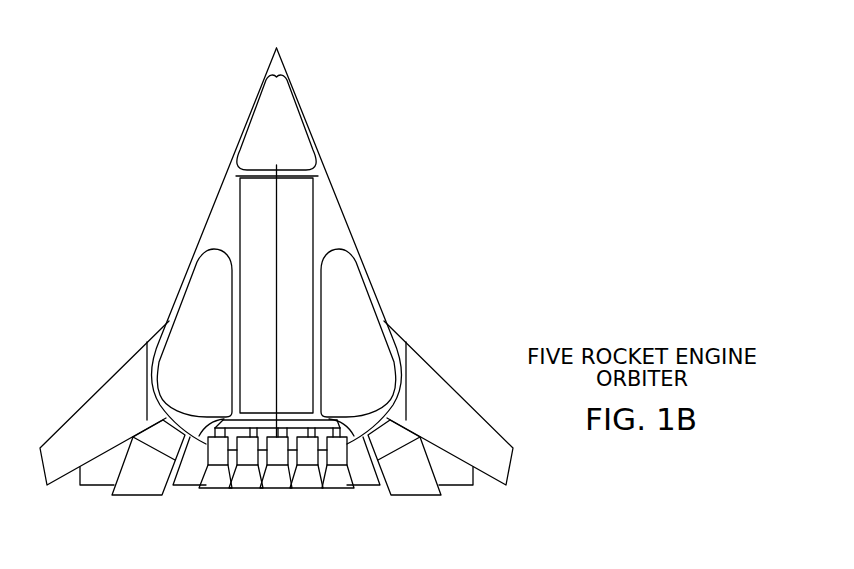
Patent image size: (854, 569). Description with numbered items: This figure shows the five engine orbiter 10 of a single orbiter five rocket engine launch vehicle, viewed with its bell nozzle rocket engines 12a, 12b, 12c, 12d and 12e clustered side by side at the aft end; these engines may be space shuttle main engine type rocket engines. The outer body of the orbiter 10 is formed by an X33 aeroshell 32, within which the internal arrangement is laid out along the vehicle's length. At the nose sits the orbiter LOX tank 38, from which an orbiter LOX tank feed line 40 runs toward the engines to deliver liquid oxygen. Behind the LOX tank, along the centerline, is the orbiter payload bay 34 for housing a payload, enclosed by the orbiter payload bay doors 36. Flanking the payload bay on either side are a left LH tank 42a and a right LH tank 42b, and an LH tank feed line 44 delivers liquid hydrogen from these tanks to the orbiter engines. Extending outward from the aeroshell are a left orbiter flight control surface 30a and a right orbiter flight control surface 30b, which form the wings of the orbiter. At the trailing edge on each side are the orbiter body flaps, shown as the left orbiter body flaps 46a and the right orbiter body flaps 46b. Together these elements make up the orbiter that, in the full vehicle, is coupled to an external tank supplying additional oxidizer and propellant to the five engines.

The five engine orbiter 10 is at (215, 198).
The rocket engine 12a is at (212, 490).
The rocket engine 12b is at (253, 490).
The rocket engine 12c is at (275, 490).
The rocket engine 12d is at (308, 490).
The rocket engine 12e is at (348, 490).
The left orbiter flight control surface 30a is at (102, 378).
The right orbiter flight control surface 30b is at (457, 378).
The X33 aeroshell 32 is at (337, 181).
The orbiter payload bay 34 is at (315, 207).
The orbiter payload bay doors 36 is at (277, 262).
The orbiter LOX tank 38 is at (299, 119).
The orbiter LOX tank feed line 40 is at (325, 167).
The left LH tank 42a is at (186, 291).
The right LH tank 42b is at (367, 285).
The LH tank feed line 44 is at (180, 484).
The left orbiter body flaps 46a is at (174, 486).
The right orbiter body flaps 46b is at (385, 488).